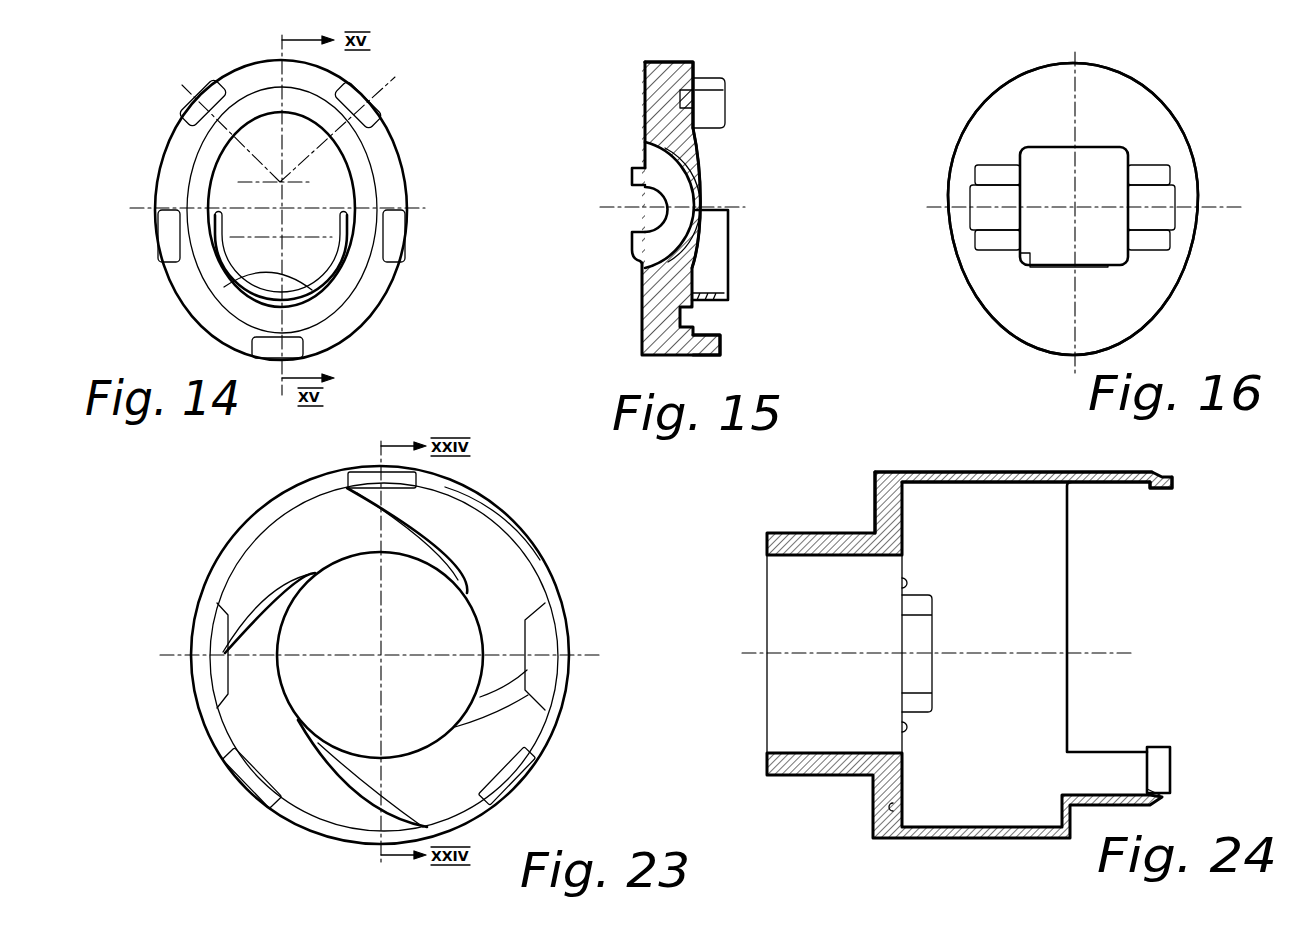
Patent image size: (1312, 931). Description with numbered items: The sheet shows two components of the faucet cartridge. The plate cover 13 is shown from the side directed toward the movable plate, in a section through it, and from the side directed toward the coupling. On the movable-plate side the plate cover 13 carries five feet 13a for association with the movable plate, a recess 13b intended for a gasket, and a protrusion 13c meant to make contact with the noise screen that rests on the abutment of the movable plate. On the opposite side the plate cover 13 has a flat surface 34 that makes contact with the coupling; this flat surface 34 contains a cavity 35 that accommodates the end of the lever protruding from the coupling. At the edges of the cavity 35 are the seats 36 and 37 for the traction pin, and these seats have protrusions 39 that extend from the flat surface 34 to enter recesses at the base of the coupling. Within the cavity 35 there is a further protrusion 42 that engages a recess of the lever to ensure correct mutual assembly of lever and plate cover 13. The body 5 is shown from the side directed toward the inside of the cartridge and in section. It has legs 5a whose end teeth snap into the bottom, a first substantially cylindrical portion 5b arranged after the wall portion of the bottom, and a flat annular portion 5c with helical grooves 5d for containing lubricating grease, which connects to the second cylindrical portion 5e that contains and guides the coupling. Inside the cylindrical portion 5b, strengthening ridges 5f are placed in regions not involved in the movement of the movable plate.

In FIG. 14, the plate cover 13 is at (161, 124).
In FIG. 15, the plate cover 13 is at (722, 154).
In FIG. 16, the plate cover 13 is at (1193, 117).
In FIG. 14, the feet 13a is at (303, 347).
In FIG. 15, the feet 13a is at (720, 336).
In FIG. 14, the recess 13b is at (352, 287).
In FIG. 14, the protrusion 13c is at (262, 276).
In FIG. 15, the protrusion 13c is at (716, 252).
In FIG. 15, the flat surface 34 is at (644, 100).
In FIG. 16, the flat surface 34 is at (1113, 103).
In FIG. 15, the cavity 35 is at (678, 188).
In FIG. 16, the cavity 35 is at (1108, 167).
In FIG. 15, the seat 36 is at (652, 196).
In FIG. 16, the seat 36 is at (985, 210).
In FIG. 16, the seat 37 is at (1165, 217).
In FIG. 15, the protrusions 39 is at (631, 172).
In FIG. 16, the protrusions 39 is at (1000, 172).
In FIG. 16, the protrusion 42 is at (1030, 262).
In FIG. 23, the body 5 is at (240, 517).
In FIG. 24, the body 5 is at (825, 525).
In FIG. 23, the legs 5a is at (374, 478).
In FIG. 24, the legs 5a is at (1113, 480).
In FIG. 23, the first substantially cylindrical portion 5b is at (228, 544).
In FIG. 24, the first substantially cylindrical portion 5b is at (972, 472).
In FIG. 23, the flat annular portion 5c is at (494, 567).
In FIG. 24, the flat annular portion 5c is at (877, 500).
In FIG. 23, the helical grooves 5d is at (271, 598).
In FIG. 24, the helical grooves 5d is at (890, 810).
In FIG. 24, the second cylindrical portion 5e is at (793, 590).
In FIG. 23, the strengthening ridges 5f is at (197, 635).